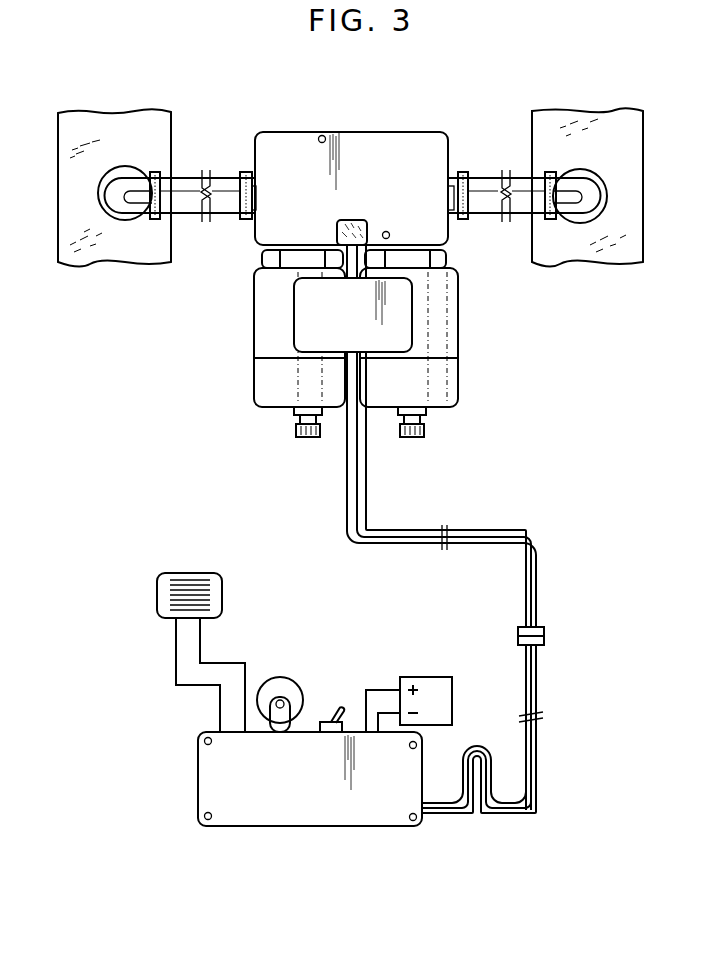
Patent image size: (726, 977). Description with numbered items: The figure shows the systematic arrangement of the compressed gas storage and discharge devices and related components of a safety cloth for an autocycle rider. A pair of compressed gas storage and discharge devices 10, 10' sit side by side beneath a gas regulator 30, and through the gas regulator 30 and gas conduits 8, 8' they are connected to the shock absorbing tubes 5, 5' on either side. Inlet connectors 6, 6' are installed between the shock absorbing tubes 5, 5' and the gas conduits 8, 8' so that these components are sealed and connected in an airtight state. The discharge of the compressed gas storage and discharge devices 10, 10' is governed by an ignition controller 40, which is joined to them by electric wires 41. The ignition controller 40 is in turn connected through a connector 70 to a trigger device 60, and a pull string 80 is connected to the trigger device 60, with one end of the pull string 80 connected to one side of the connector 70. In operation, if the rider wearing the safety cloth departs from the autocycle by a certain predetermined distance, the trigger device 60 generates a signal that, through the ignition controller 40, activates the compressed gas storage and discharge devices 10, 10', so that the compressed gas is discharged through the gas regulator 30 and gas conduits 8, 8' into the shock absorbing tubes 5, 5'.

The shock absorbing tube 5 is at (118, 167).
The shock absorbing tube 5' is at (614, 187).
The inlet connector 6 is at (125, 236).
The inlet connector 6' is at (580, 139).
The gas conduit 8 is at (203, 171).
The gas conduit 8' is at (502, 163).
The gas regulator 30 is at (425, 140).
The compressed gas storage and discharge device 10 is at (274, 343).
The compressed gas storage and discharge device 10' is at (440, 343).
The ignition controller 40 is at (410, 326).
The electric wires 41 is at (360, 262).
The connector 70 is at (545, 633).
The trigger device 60 is at (272, 818).
The pull string 80 is at (468, 815).